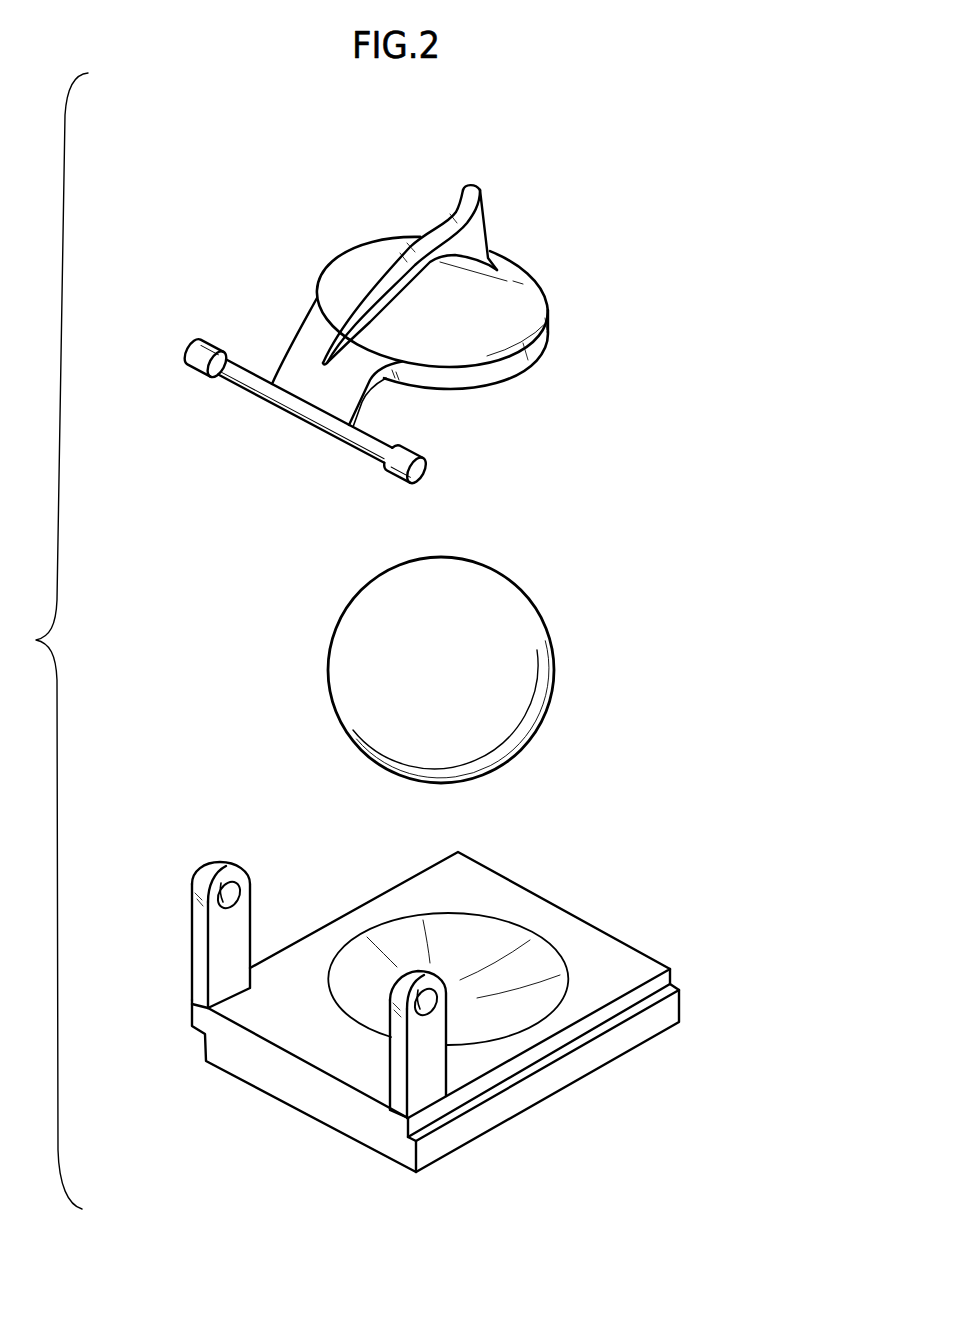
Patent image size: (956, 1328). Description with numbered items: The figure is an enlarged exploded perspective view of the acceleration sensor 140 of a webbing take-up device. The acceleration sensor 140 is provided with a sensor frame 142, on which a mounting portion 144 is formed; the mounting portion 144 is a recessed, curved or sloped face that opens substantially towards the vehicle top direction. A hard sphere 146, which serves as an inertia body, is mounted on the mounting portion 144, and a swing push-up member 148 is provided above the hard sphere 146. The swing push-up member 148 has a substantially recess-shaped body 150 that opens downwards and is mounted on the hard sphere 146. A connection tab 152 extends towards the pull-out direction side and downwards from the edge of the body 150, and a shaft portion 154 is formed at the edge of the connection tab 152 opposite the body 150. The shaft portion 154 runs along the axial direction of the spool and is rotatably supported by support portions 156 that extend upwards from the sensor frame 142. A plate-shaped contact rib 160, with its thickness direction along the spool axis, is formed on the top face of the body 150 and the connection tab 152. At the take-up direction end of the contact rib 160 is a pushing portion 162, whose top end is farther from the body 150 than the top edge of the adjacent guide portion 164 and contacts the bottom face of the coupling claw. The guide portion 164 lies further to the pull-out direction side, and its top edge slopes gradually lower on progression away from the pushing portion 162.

The acceleration sensor 140 is at (621, 454).
The sensor frame 142 is at (340, 1057).
The mounting portion 144 is at (523, 1013).
The hard sphere 146 is at (533, 655).
The swing push-up member 148 is at (240, 433).
The body 150 is at (523, 303).
The connection tab 152 is at (350, 396).
The shaft portion 154 is at (198, 366).
The support portions 156 is at (208, 866).
The contact rib 160 is at (496, 212).
The pushing portion 162 is at (471, 183).
The guide portion 164 is at (412, 245).